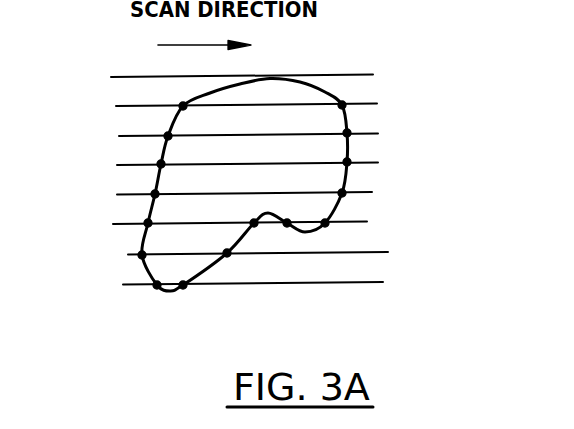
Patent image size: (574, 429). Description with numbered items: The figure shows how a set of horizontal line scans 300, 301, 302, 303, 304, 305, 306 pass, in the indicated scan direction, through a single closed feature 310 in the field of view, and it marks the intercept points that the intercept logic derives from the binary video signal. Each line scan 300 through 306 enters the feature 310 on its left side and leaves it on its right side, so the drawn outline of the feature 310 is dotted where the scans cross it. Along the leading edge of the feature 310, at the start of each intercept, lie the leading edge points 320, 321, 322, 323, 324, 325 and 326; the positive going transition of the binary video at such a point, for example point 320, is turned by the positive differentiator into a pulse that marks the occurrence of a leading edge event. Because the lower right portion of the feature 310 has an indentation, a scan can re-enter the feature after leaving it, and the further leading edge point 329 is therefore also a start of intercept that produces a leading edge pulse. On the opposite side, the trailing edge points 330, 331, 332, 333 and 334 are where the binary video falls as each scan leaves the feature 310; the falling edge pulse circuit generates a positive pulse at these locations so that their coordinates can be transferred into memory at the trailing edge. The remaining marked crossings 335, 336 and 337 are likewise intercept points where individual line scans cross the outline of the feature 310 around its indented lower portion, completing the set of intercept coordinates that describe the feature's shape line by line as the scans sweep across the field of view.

The line scan 300 is at (357, 106).
The line scan 301 is at (367, 133).
The line scan 302 is at (368, 162).
The line scan 303 is at (367, 193).
The line scan 304 is at (358, 222).
The line scan 305 is at (378, 252).
The line scan 306 is at (367, 282).
The feature 310 is at (262, 158).
The leading edge intercept point 320 is at (181, 104).
The leading edge intercept point 321 is at (166, 133).
The leading edge intercept point 322 is at (159, 165).
The leading edge intercept point 323 is at (153, 195).
The leading edge intercept point 324 is at (147, 225).
The leading edge intercept point 325 is at (141, 256).
The leading edge intercept point 326 is at (156, 286).
The leading edge intercept point 329 is at (287, 226).
The trailing edge intercept point 330 is at (340, 108).
The trailing edge intercept point 331 is at (345, 136).
The trailing edge intercept point 332 is at (345, 165).
The trailing edge intercept point 333 is at (340, 195).
The trailing edge intercept point 334 is at (326, 226).
The intercept point 335 is at (255, 221).
The intercept point 336 is at (228, 255).
The intercept point 337 is at (185, 288).